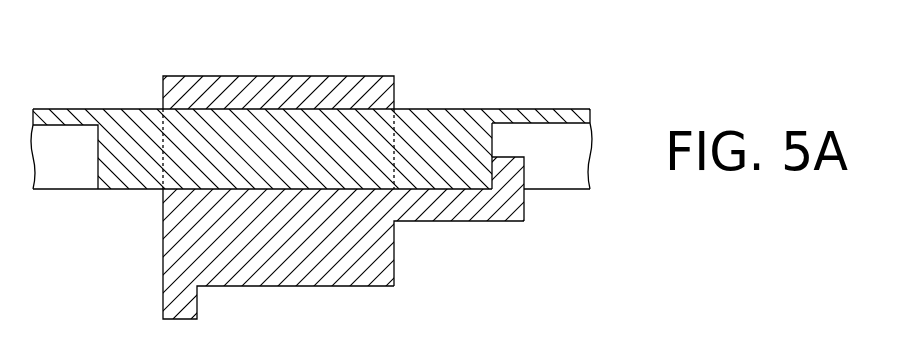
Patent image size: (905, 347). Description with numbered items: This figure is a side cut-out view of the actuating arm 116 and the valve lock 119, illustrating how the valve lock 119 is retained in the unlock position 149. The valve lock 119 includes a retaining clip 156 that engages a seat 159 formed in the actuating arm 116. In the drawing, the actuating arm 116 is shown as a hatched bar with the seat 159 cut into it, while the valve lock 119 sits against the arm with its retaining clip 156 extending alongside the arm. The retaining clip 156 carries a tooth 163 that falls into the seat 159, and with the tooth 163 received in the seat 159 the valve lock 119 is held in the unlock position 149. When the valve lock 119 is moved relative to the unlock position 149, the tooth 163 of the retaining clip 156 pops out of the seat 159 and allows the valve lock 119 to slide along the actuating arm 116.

The actuating arm 116 is at (438, 123).
The valve lock 119 is at (307, 272).
The unlock position 149 is at (277, 54).
The retaining clip 156 is at (458, 223).
The seat 159 is at (522, 140).
The tooth 163 is at (513, 178).